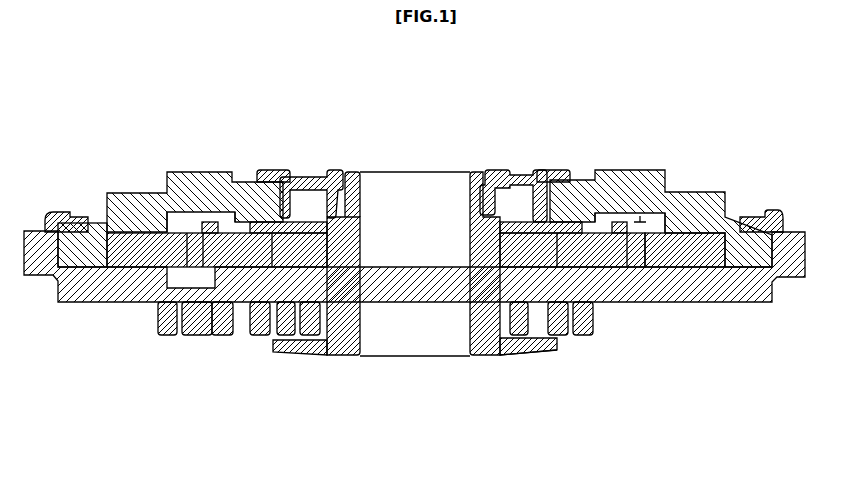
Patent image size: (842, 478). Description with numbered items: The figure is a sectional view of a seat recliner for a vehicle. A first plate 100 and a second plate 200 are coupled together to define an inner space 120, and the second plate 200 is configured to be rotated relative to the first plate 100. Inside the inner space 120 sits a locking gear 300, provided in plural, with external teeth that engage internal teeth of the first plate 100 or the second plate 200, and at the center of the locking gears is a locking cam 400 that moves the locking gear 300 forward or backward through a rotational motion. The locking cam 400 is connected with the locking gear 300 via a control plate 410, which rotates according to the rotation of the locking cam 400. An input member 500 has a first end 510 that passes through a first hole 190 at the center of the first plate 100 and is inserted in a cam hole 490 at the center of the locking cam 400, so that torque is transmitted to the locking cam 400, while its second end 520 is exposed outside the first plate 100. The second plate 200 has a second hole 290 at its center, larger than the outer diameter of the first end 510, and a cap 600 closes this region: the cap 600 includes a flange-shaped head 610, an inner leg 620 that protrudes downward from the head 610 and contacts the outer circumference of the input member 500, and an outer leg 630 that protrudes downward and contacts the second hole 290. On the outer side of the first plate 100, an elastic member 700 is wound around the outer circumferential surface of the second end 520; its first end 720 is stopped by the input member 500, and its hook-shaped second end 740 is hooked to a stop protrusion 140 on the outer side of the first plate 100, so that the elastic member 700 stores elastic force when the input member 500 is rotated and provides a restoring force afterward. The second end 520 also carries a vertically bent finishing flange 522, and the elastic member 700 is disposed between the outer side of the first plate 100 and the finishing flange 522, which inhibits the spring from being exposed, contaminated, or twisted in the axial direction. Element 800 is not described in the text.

The first plate 100 is at (722, 290).
The inner space 120 is at (640, 218).
The stop protrusion 140 is at (190, 338).
The first hole 190 is at (370, 271).
The second plate 200 is at (718, 192).
The second hole 290 is at (540, 174).
The locking gear 300 is at (688, 250).
The locking cam 400 is at (540, 245).
The control plate 410 is at (521, 174).
The cam hole 490 is at (532, 332).
The input member 500 is at (474, 272).
The first end 510 is at (468, 182).
The second end 520 is at (468, 356).
The finishing flange 522 is at (490, 362).
The cap 600 is at (310, 149).
The head 610 is at (318, 174).
The inner leg 620 is at (378, 186).
The outer leg 630 is at (305, 178).
The elastic member 700 is at (264, 340).
The first end 720 is at (310, 342).
The second end 740 is at (220, 338).
The oil seal 800 is at (60, 208).